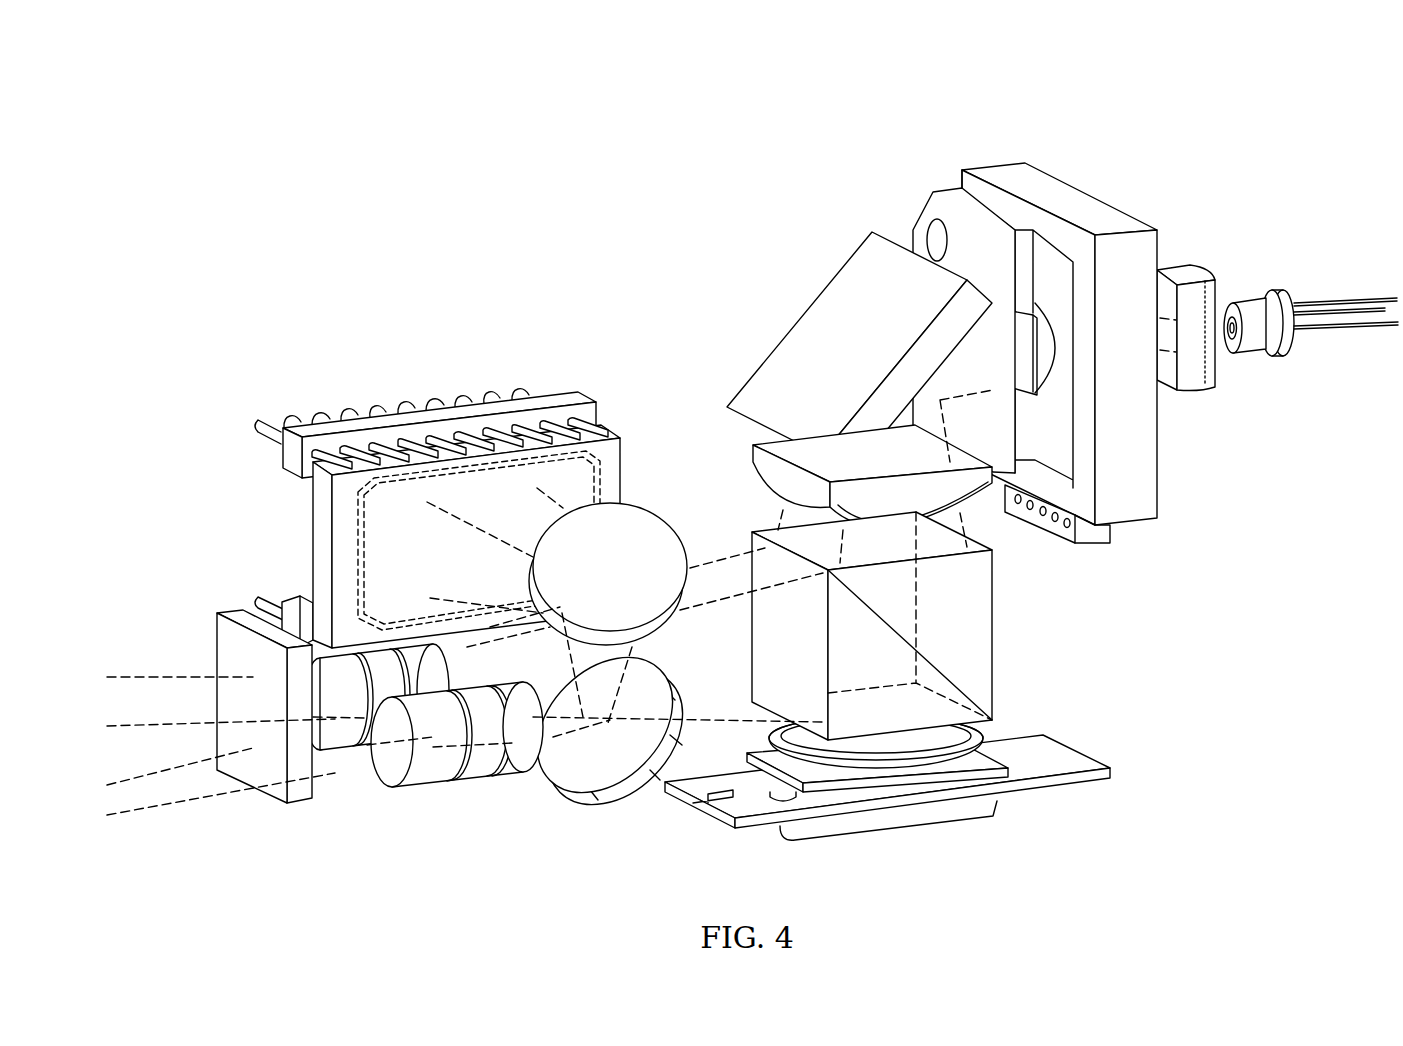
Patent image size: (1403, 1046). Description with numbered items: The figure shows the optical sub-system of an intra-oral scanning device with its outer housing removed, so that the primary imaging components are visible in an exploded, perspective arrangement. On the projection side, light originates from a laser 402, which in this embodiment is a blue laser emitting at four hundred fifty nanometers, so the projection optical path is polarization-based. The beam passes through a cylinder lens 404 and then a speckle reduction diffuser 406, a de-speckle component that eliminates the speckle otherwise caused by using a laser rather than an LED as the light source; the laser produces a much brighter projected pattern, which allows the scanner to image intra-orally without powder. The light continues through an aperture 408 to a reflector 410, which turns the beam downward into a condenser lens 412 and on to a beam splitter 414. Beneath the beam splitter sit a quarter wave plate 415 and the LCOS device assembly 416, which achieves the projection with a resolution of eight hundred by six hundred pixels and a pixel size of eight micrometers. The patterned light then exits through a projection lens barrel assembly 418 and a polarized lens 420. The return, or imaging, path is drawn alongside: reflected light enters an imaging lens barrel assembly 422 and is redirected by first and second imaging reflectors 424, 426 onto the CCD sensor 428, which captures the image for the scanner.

The laser 402 is at (1283, 291).
The cylinder lens 404 is at (1183, 272).
The speckle reduction diffuser 406 is at (1062, 195).
The aperture 408 is at (972, 230).
The reflector 410 is at (847, 282).
The condenser lens 412 is at (875, 462).
The beam splitter 414 is at (993, 636).
The quarter wave plate 415 is at (990, 733).
The LCOS device assembly 416 is at (932, 775).
The projection lens barrel assembly 418 is at (335, 748).
The polarized lens 420 is at (233, 611).
The imaging lens barrel assembly 422 is at (467, 783).
The first imaging reflector 424 is at (630, 782).
The second imaging reflector 426 is at (633, 522).
The CCD sensor 428 is at (407, 407).